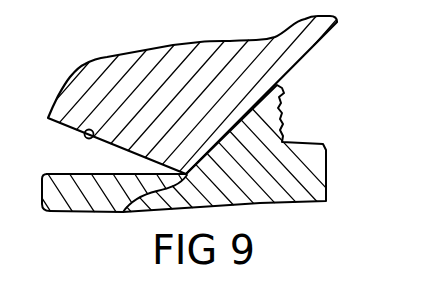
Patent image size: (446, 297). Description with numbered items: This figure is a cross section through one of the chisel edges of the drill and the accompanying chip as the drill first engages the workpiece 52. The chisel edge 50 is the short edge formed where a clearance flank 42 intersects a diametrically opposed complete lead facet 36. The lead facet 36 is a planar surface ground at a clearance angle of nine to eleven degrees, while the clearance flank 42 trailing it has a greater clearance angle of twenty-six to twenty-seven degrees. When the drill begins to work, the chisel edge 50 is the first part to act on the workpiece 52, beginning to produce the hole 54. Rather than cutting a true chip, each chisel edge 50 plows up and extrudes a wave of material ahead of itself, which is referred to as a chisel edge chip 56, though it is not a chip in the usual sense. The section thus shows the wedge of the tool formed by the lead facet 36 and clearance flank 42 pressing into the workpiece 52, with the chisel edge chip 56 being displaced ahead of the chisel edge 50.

The complete lead facet 36 is at (85, 129).
The clearance flank 42 is at (306, 48).
The chisel edge 50 is at (126, 210).
The workpiece 52 is at (80, 212).
The hole 54 is at (68, 174).
The chisel edge chip 56 is at (285, 103).